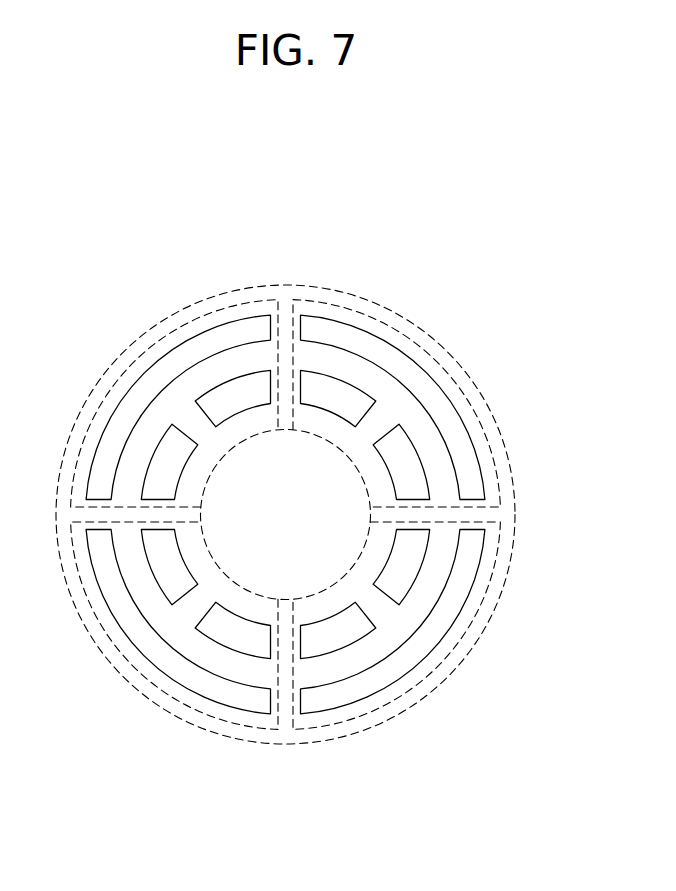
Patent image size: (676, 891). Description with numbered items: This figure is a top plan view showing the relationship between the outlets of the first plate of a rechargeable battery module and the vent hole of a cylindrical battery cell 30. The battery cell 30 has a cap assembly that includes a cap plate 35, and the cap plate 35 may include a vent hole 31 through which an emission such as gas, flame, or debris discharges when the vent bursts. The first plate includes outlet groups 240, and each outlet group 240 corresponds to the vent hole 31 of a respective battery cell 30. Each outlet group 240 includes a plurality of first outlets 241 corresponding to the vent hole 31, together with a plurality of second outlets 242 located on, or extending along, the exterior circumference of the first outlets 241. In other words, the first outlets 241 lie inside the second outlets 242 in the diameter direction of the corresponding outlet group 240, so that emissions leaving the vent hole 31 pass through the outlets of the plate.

The cylindrical battery cell 30 is at (410, 322).
The vent hole 31 is at (346, 310).
The cap plate 35 is at (340, 535).
The outlet group 240 is at (262, 231).
The first outlets 241 is at (221, 395).
The second outlets 242 is at (257, 328).